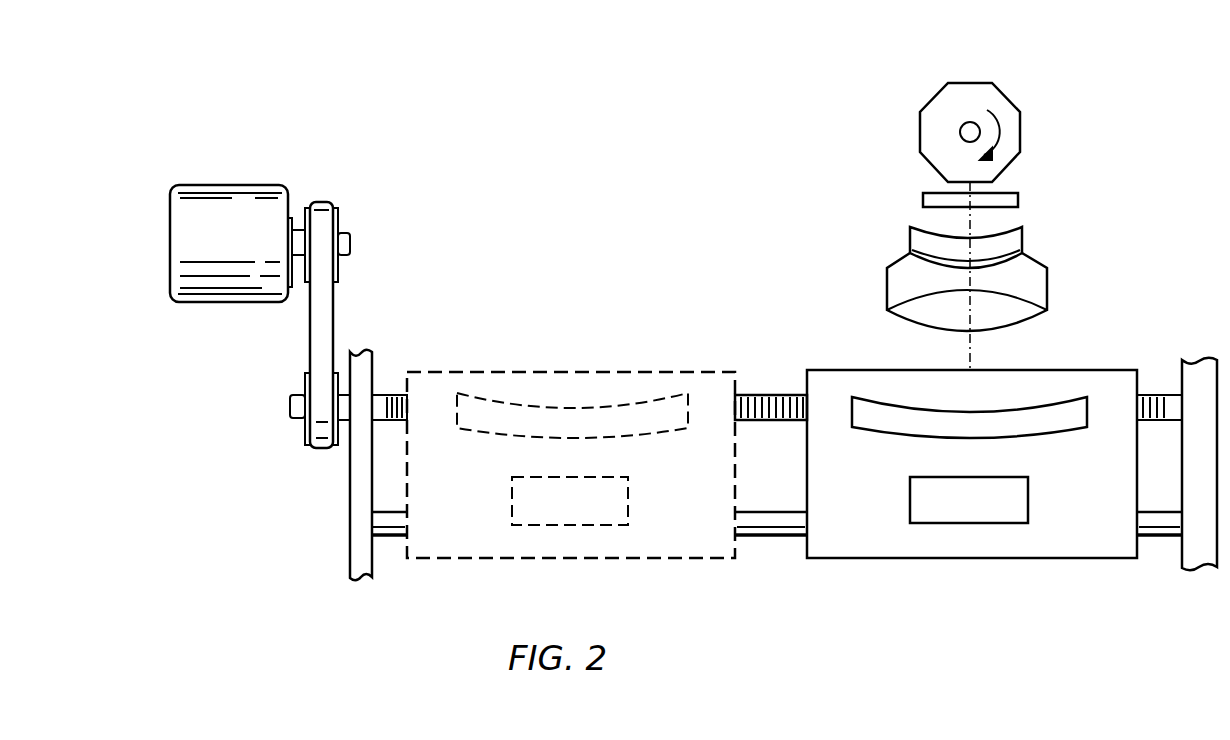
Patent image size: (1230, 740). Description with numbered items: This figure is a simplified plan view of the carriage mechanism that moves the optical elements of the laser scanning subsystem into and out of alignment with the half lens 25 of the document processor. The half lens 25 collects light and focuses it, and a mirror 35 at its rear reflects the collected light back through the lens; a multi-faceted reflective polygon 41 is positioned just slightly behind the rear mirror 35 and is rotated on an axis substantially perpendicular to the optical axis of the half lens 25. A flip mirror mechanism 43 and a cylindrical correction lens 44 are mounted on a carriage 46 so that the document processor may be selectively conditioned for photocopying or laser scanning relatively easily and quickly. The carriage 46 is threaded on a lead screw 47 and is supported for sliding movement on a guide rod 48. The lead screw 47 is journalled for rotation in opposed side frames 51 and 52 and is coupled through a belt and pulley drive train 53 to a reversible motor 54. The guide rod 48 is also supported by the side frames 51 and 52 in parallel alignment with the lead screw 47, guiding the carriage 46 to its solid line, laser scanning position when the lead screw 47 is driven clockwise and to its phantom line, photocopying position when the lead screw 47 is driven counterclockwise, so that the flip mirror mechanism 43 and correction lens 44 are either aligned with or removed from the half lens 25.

The half lens 25 is at (1048, 280).
The mirror 35 is at (1018, 201).
The multi-faceted reflective polygon 41 is at (935, 112).
The flip mirror mechanism 43 is at (1028, 500).
The cylindrical correction lens 44 is at (871, 420).
The carriage 46 is at (972, 487).
The lead screw 47 is at (772, 393).
The guide rod 48 is at (769, 538).
The side frame 51 is at (355, 488).
The side frame 52 is at (1182, 553).
The belt and pulley drive train 53 is at (307, 322).
The reversible motor 54 is at (256, 185).